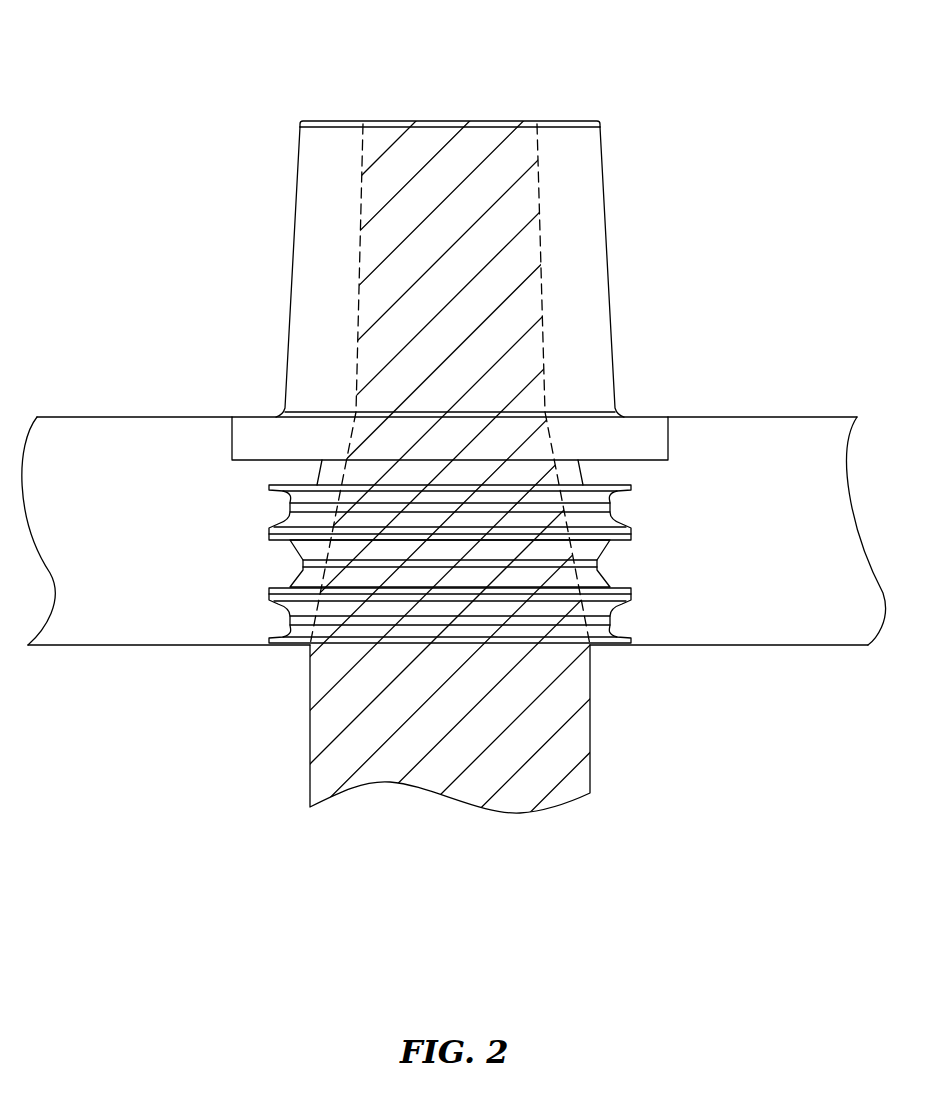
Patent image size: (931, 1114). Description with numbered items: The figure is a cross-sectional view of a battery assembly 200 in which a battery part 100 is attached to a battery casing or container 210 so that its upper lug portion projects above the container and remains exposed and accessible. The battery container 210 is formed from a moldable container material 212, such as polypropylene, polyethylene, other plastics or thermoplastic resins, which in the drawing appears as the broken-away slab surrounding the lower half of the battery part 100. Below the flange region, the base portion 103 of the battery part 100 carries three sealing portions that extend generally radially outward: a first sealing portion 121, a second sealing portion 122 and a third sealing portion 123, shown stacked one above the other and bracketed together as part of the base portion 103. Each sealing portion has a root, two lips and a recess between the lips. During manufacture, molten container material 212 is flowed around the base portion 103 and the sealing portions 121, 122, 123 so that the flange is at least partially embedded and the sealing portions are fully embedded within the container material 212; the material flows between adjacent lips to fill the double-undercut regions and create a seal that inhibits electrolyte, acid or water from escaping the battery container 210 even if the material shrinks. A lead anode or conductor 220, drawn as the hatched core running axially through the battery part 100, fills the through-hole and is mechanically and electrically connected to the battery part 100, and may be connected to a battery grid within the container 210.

The battery assembly 200 is at (740, 117).
The battery part 100 is at (585, 213).
The conductor 220 is at (487, 149).
The container material 212 is at (48, 435).
The battery container 210 is at (814, 665).
The base portion 103 is at (648, 485).
The first sealing portion 121 is at (262, 622).
The second sealing portion 122 is at (262, 563).
The third sealing portion 123 is at (262, 504).